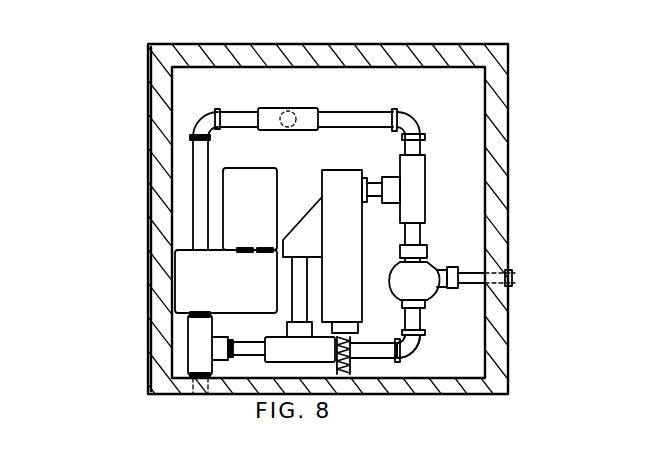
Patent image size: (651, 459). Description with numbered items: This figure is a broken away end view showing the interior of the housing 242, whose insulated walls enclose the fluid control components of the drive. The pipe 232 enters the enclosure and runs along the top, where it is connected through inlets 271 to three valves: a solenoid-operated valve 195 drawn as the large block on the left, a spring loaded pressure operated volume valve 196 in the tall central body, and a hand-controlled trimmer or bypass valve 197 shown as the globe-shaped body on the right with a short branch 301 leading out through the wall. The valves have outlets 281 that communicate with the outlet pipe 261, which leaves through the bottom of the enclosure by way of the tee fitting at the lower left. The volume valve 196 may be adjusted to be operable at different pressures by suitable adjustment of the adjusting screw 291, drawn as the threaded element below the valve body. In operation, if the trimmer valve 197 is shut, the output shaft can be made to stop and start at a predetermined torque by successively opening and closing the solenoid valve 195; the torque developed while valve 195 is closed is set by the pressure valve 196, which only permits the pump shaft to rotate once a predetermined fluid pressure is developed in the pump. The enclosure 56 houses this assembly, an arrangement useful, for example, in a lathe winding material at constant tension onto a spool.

The housing 56 is at (328, 197).
The pipe 232 is at (287, 111).
The inlets 271 is at (200, 157).
The housing 242 is at (493, 181).
The spring loaded pressure operated volume valve 196 is at (333, 195).
The hand-controlled trimmer or bypass valve 197 is at (422, 263).
The solenoid-operated valve 195 is at (197, 287).
The outlet conduit 301 is at (515, 280).
The outlet pipe 261 is at (195, 381).
The adjusting screw 291 is at (382, 349).
The outlets 281 is at (398, 347).